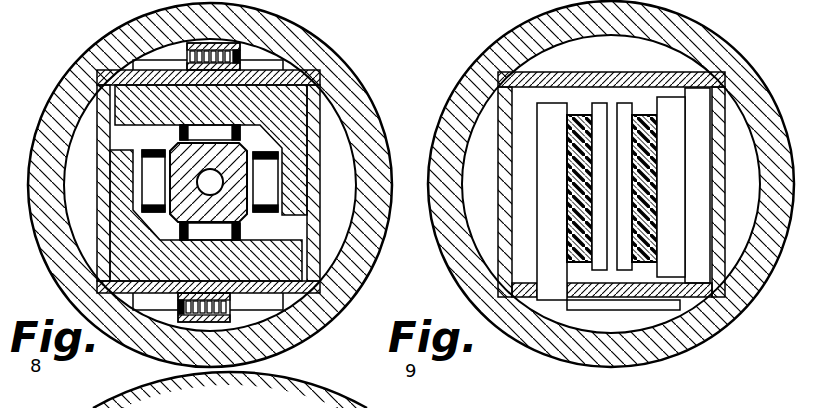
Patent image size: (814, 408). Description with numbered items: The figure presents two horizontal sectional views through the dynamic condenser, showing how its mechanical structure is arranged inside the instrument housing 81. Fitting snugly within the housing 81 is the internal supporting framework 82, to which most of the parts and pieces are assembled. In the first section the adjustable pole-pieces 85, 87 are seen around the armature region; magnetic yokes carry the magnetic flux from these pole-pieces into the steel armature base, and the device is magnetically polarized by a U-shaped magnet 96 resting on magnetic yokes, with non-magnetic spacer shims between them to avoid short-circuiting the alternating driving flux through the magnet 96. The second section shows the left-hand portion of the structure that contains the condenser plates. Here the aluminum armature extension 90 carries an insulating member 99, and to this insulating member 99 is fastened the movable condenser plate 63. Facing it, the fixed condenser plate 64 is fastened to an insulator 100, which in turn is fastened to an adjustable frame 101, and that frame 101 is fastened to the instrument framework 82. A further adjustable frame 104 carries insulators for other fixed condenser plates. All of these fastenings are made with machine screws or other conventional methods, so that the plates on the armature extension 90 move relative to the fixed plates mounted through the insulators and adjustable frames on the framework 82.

In FIG. 8, the instrument housing 81 is at (307, 50).
In FIG. 9, the instrument housing 81 is at (718, 52).
In FIG. 8, the internal supporting framework 82 is at (317, 103).
In FIG. 9, the internal supporting framework 82 is at (720, 103).
In FIG. 8, the adjustable pole-piece 85 is at (267, 182).
In FIG. 8, the adjustable pole-piece 87 is at (153, 188).
In FIG. 8, the U-shaped magnet 96 is at (132, 97).
In FIG. 8, the adjustable frame 104 is at (110, 400).
In FIG. 9, the insulating member 99 is at (653, 217).
In FIG. 9, the armature extension 90 is at (670, 247).
In FIG. 9, the insulator 100 is at (572, 232).
In FIG. 9, the adjustable frame 101 is at (550, 303).
In FIG. 9, the condenser plate 63 is at (623, 263).
In FIG. 9, the fixed condenser plate 64 is at (600, 262).